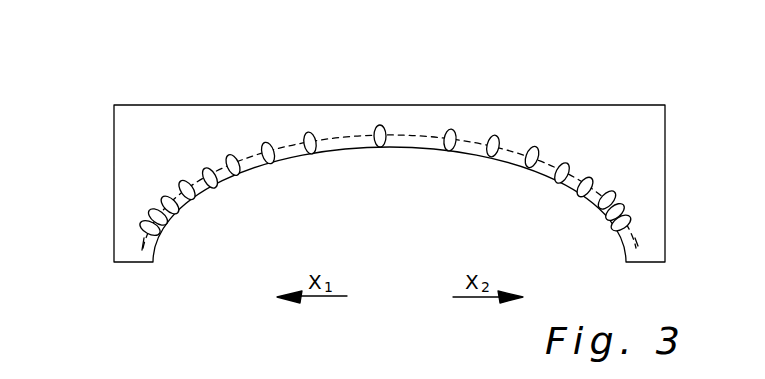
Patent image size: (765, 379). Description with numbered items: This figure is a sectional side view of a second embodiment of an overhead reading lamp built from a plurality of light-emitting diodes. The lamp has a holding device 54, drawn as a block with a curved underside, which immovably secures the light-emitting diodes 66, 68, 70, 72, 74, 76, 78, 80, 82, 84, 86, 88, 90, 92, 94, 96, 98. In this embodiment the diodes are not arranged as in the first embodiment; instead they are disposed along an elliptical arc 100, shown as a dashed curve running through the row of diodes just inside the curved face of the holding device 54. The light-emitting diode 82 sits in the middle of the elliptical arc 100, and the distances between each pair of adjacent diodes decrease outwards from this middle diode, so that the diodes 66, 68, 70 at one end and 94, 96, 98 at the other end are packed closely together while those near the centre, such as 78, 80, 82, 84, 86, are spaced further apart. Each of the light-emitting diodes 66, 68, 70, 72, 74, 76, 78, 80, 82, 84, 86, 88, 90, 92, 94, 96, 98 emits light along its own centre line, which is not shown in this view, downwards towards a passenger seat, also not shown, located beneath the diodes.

The holding device 54 is at (128, 133).
The light-emitting diode 66 is at (142, 229).
The light-emitting diode 68 is at (150, 211).
The light-emitting diode 70 is at (165, 198).
The light-emitting diode 72 is at (183, 183).
The light-emitting diode 74 is at (207, 170).
The light-emitting diode 76 is at (232, 158).
The light-emitting diode 78 is at (267, 146).
The light-emitting diode 80 is at (311, 136).
The light-emitting diode 82 is at (381, 127).
The light-emitting diode 84 is at (451, 131).
The light-emitting diode 86 is at (496, 138).
The light-emitting diode 88 is at (537, 149).
The light-emitting diode 90 is at (567, 165).
The light-emitting diode 92 is at (592, 182).
The light-emitting diode 94 is at (603, 190).
The light-emitting diode 96 is at (615, 207).
The light-emitting diode 98 is at (622, 223).
The elliptical arc 100 is at (418, 132).